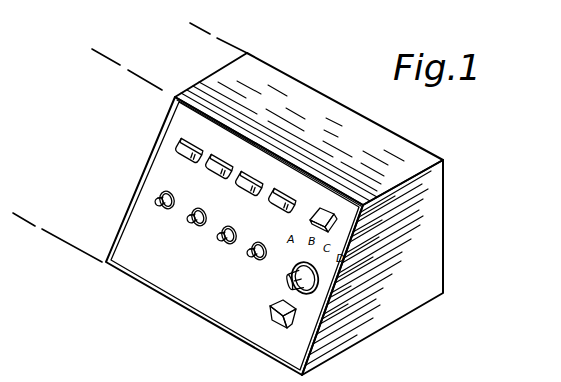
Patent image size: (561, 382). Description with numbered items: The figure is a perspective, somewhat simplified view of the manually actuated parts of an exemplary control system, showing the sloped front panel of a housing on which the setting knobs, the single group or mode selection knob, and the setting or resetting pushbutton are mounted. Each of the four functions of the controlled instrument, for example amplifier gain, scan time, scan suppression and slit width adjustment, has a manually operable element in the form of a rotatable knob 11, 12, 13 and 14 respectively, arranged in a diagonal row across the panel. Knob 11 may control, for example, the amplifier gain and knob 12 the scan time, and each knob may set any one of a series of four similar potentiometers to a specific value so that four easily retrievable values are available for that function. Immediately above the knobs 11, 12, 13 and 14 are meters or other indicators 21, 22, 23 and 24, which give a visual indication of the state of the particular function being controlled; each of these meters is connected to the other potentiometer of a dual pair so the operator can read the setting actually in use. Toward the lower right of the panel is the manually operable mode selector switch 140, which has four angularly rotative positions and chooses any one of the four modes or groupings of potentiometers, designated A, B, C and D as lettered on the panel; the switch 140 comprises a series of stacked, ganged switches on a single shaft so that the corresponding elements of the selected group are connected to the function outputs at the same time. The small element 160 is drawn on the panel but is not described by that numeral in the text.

The rotatable knob 11 is at (157, 202).
The rotatable knob 12 is at (188, 220).
The rotatable knob 13 is at (222, 237).
The rotatable knob 14 is at (253, 255).
The meter 21 is at (192, 140).
The meter 22 is at (218, 158).
The meter 23 is at (255, 177).
The meter 24 is at (290, 194).
The mode selector switch 140 is at (309, 300).
The connector plug 160 is at (271, 328).